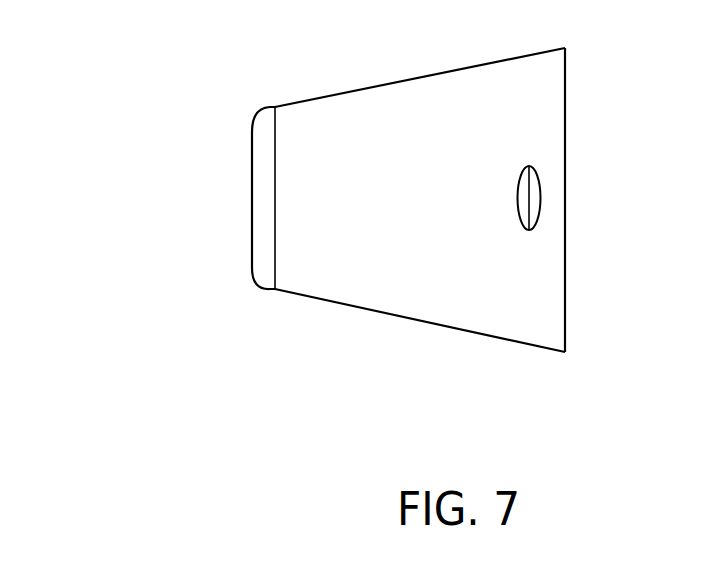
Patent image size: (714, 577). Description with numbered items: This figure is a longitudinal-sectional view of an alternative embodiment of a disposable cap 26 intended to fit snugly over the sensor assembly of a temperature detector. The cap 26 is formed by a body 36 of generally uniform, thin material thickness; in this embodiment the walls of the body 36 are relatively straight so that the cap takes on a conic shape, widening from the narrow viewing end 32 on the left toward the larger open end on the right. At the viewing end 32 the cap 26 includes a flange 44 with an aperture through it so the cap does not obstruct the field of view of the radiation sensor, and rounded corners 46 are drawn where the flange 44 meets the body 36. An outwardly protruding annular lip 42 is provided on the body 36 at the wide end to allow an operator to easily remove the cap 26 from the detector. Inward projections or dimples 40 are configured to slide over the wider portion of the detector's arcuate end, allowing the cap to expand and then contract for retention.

The cap 26 is at (140, 43).
The viewing end 32 is at (108, 198).
The body 36 is at (395, 80).
The dimples 40 is at (540, 185).
The annular lip 42 is at (567, 50).
The flange 44 is at (252, 131).
The rounded corner 46 is at (262, 112).